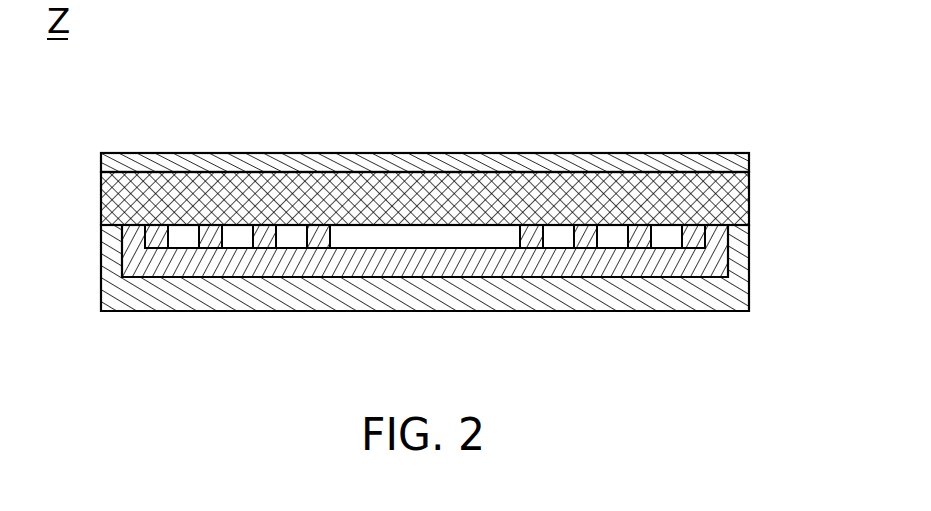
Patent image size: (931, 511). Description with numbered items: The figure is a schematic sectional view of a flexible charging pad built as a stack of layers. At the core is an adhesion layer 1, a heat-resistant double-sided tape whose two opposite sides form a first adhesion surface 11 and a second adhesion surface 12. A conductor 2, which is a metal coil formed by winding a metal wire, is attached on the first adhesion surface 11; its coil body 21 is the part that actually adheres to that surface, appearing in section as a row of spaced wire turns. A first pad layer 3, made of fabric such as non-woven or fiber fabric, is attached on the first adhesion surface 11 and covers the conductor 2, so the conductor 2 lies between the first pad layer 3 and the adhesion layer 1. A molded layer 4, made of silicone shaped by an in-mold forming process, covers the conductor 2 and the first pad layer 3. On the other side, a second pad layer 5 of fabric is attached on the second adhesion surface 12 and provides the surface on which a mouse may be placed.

The adhesion layer 1 is at (749, 215).
The conductor 2 is at (359, 241).
The first pad layer 3 is at (250, 270).
The molded layer 4 is at (749, 282).
The second pad layer 5 is at (749, 163).
The first adhesion surface 11 is at (406, 226).
The second adhesion surface 12 is at (408, 172).
The coil body 21 is at (150, 236).